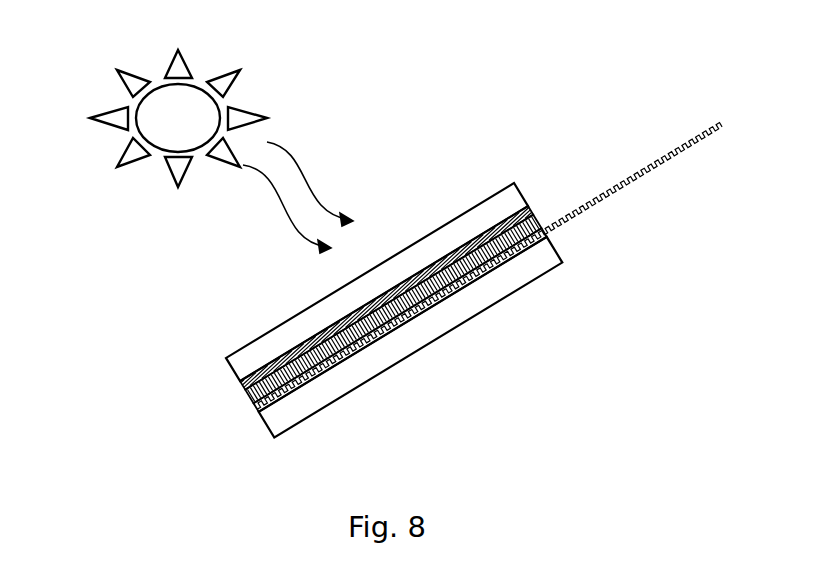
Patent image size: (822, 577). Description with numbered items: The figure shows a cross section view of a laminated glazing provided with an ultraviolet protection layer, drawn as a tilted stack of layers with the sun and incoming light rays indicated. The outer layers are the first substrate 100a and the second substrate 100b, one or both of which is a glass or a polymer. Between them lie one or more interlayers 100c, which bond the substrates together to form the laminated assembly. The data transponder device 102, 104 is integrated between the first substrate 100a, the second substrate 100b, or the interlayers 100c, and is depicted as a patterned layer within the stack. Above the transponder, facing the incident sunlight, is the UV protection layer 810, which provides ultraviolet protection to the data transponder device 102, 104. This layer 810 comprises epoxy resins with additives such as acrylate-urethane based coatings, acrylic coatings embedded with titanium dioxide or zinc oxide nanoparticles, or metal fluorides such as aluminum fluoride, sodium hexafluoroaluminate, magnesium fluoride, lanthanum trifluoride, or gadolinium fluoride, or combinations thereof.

The first substrate 100a is at (513, 193).
The second substrate 100b is at (512, 291).
The interlayer 100c is at (538, 222).
The data transponder device 102 is at (516, 266).
The data transponder device 104 is at (542, 232).
The UV protection layer 810 is at (240, 381).